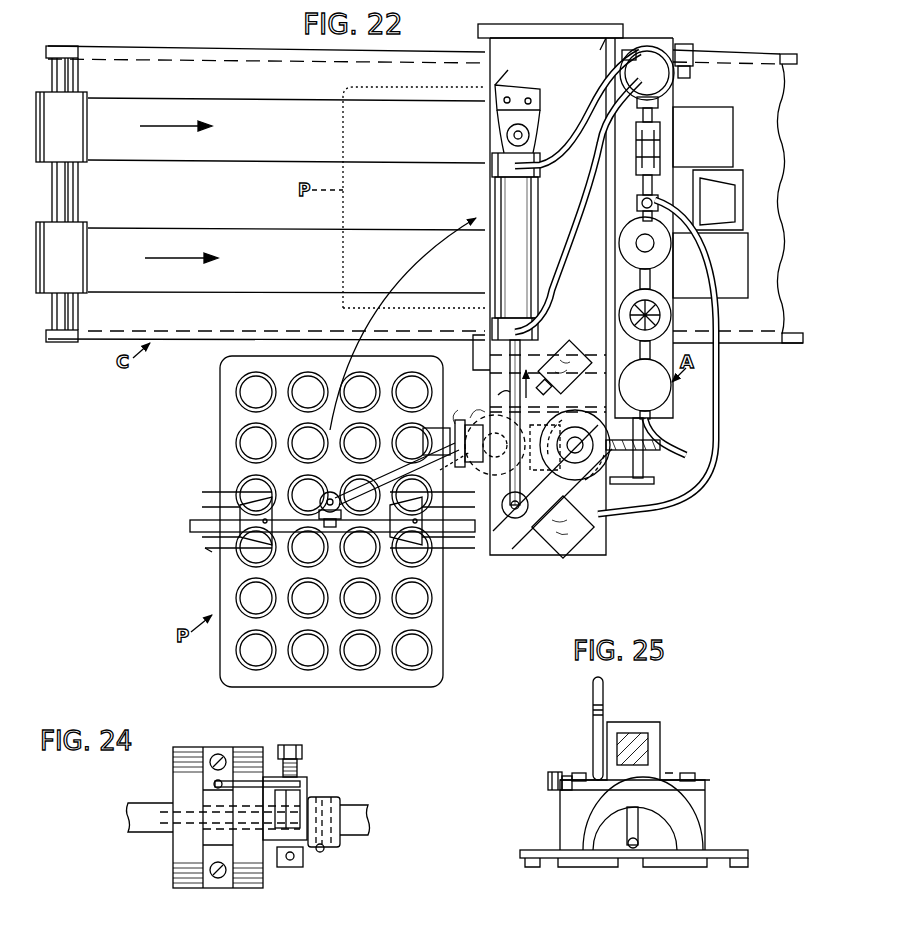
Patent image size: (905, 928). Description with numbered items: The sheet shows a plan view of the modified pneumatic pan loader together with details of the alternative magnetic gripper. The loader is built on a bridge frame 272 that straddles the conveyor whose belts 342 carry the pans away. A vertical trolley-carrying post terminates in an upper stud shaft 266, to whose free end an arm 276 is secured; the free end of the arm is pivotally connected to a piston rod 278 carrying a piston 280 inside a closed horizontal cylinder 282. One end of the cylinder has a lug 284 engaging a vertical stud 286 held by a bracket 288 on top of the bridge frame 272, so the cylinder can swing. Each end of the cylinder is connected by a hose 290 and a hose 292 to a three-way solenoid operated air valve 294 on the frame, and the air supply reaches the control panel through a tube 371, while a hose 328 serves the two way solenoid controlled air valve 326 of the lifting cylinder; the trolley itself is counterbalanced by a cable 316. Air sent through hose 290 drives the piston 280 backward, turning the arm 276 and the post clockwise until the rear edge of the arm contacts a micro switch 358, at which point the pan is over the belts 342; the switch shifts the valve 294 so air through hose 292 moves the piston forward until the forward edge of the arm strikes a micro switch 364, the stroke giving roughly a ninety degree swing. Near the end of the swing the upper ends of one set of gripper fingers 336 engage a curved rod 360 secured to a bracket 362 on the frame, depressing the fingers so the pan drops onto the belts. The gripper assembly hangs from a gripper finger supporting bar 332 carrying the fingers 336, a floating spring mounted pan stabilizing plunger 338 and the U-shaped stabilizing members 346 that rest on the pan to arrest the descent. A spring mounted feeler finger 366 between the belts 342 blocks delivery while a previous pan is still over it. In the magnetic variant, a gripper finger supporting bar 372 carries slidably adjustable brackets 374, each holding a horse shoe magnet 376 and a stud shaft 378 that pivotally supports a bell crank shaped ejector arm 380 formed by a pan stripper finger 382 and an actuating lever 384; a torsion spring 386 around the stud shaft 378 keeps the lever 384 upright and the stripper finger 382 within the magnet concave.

In FIG. 22, the bridge frame 272 is at (480, 30).
In FIG. 22, the curved bar or rod 360 is at (505, 86).
In FIG. 22, the bracket 362 is at (600, 60).
In FIG. 22, the three-way solenoid operated air valve 294 is at (662, 84).
In FIG. 22, the bracket 288 is at (506, 106).
In FIG. 22, the vertical stud 286 is at (512, 136).
In FIG. 22, the lug 284 is at (494, 156).
In FIG. 22, the tube or hose 292 is at (548, 170).
In FIG. 22, the closed horizontal cylinder 282 is at (537, 224).
In FIG. 22, the spring mounted feeler finger 366 is at (717, 193).
In FIG. 22, the belts 342 is at (153, 150).
In FIG. 22, the tube or hose 290 is at (562, 258).
In FIG. 22, the piston 280 is at (515, 300).
In FIG. 22, the micro switch 358 is at (550, 346).
In FIG. 22, the piston rod 278 is at (510, 393).
In FIG. 22, the two way solenoid controlled air valve 326 is at (483, 468).
In FIG. 22, the spring mounted gripper fingers 336 is at (202, 492).
In FIG. 22, the U-shaped stabilizing members 346 is at (212, 552).
In FIG. 22, the floating spring mounted pan stabilizing plunger 338 is at (332, 528).
In FIG. 22, the gripper finger supporting bar 332 is at (470, 534).
In FIG. 22, the arm 276 is at (548, 548).
In FIG. 22, the micro switch 364 is at (578, 550).
In FIG. 22, the stud shaft 266 is at (608, 512).
In FIG. 22, the cable 316 is at (640, 456).
In FIG. 22, the hose 328 is at (720, 400).
In FIG. 22, the tube 371 is at (688, 453).
In FIG. 24, the actuating lever 384 is at (235, 780).
In FIG. 25, the actuating lever 384 is at (603, 692).
In FIG. 24, the stud shaft 378 is at (302, 749).
In FIG. 25, the stud shaft 378 is at (552, 779).
In FIG. 24, the torsion spring 386 is at (303, 770).
In FIG. 25, the torsion spring 386 is at (586, 772).
In FIG. 24, the bell crank shaped ejector arm 380 is at (300, 795).
In FIG. 24, the gripper finger supporting bar 372 is at (160, 800).
In FIG. 25, the gripper finger supporting bar 372 is at (645, 750).
In FIG. 24, the pan stripper finger 382 is at (160, 830).
In FIG. 25, the pan stripper finger 382 is at (640, 848).
In FIG. 24, the horse shoe magnet 376 is at (172, 877).
In FIG. 25, the horse shoe magnet 376 is at (575, 835).
In FIG. 24, the brackets 374 is at (228, 888).
In FIG. 25, the brackets 374 is at (700, 792).